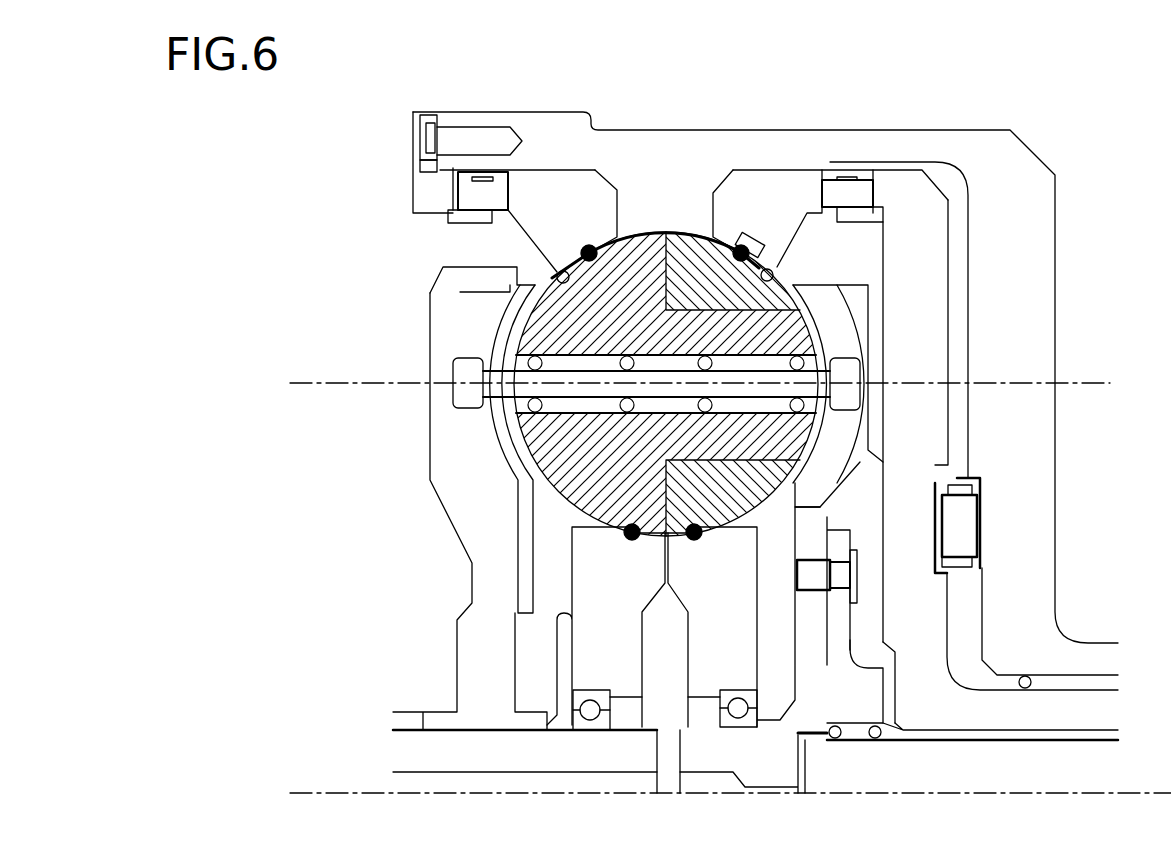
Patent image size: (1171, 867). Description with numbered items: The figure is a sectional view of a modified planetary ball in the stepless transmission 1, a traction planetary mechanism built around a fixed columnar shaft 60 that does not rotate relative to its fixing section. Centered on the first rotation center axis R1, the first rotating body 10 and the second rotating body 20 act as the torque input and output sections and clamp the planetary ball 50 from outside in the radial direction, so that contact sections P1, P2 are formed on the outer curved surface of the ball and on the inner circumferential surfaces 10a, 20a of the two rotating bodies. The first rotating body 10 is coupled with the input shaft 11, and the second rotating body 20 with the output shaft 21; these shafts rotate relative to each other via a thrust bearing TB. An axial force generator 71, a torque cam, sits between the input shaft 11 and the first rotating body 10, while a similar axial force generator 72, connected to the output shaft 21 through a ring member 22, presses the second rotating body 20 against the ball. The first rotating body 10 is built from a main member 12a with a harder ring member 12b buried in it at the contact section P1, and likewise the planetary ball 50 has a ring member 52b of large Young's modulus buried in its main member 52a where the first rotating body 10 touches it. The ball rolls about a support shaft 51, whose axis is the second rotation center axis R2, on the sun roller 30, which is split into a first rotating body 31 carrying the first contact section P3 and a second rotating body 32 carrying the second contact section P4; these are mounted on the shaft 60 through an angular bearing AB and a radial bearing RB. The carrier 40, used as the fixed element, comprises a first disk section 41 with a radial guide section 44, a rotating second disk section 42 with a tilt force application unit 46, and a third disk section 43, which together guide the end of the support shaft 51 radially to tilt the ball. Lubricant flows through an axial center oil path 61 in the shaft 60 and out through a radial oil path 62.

The stepless transmission 1 is at (1110, 86).
The first rotating body 10 is at (772, 170).
The inner circumferential surface 10a is at (775, 290).
The input shaft 11 is at (950, 250).
The main member 12a is at (810, 187).
The ring member 12b is at (743, 237).
The second rotating body 20 is at (552, 170).
The inner circumferential surface 20a is at (548, 272).
The output shaft 21 is at (625, 130).
The ring member 22 is at (413, 195).
The sun roller 30 is at (624, 650).
The first rotating body 31 is at (766, 603).
The second rotating body 32 is at (572, 605).
The carrier 40 is at (721, 491).
The first disk section 41 is at (880, 275).
The second disk section 42 is at (432, 490).
The third disk section 43 is at (440, 266).
The radial guide section 44 is at (840, 320).
The tilt force application unit 46 is at (472, 317).
The planetary ball 50 is at (658, 232).
The support shaft 51 is at (467, 407).
The main member 52a is at (645, 245).
The ring member 52b is at (693, 246).
The shaft 60 is at (410, 752).
The axial center oil path 61 is at (680, 793).
The radial oil path 62 is at (674, 752).
The axial force generator 71 is at (850, 195).
The axial force generator 72 is at (490, 200).
The contact section P1 is at (748, 246).
The contact section P2 is at (590, 246).
The first contact section P3 is at (696, 541).
The second contact section P4 is at (632, 541).
The first rotation center axis R1 is at (318, 792).
The second rotation center axis R2 is at (333, 384).
The radial bearing RB is at (596, 720).
The angular bearing AB is at (748, 720).
The thrust bearing TB is at (960, 563).